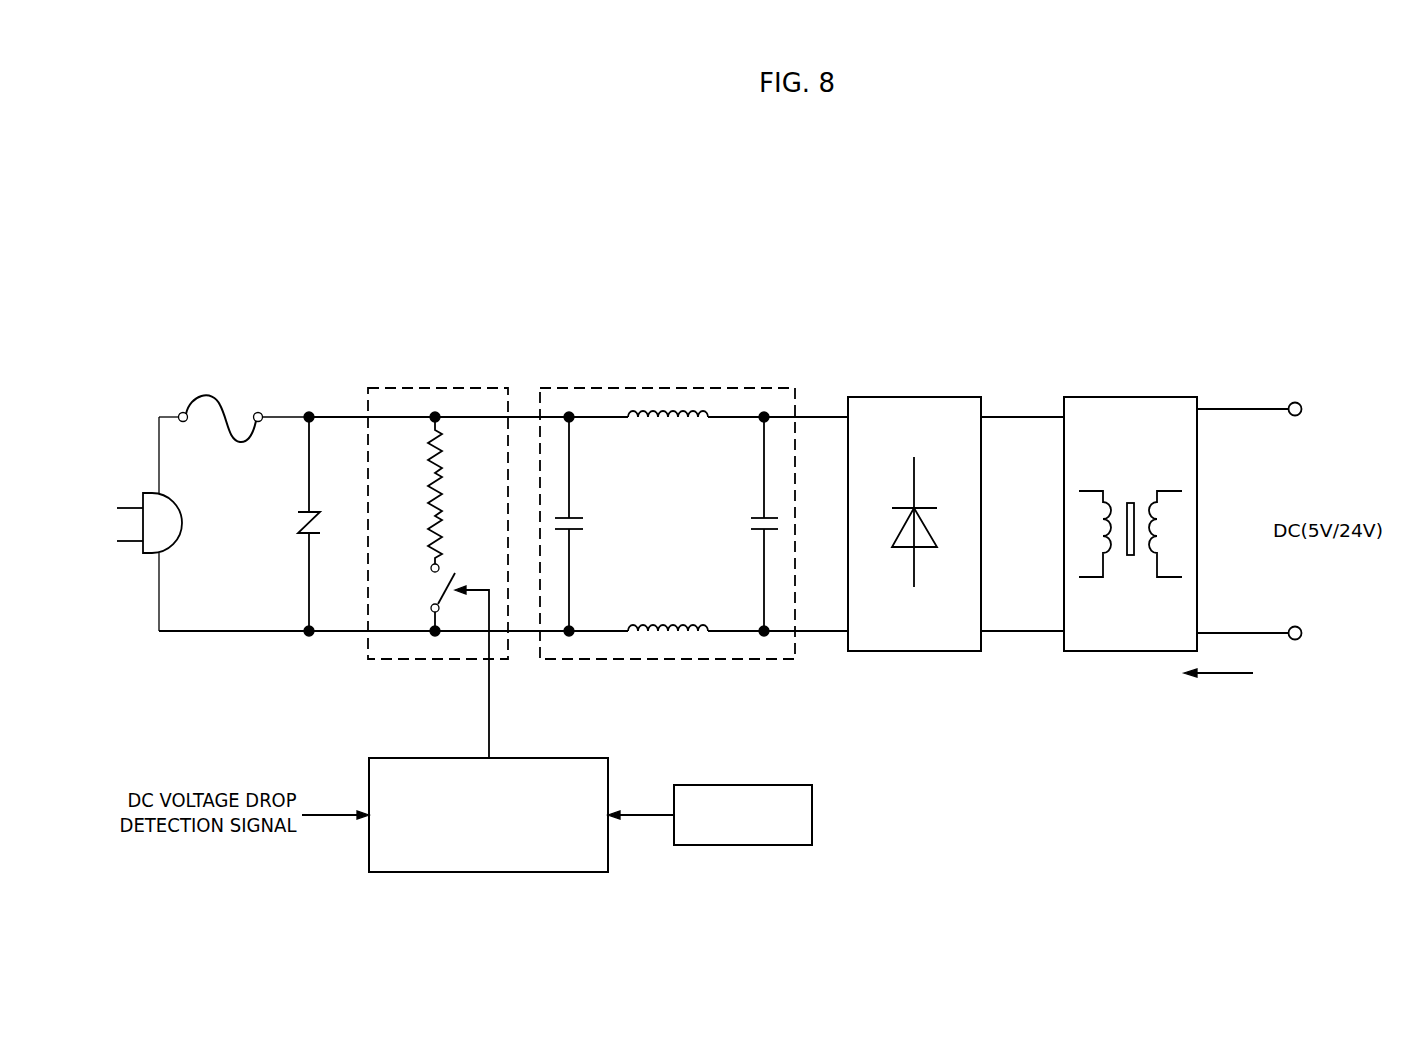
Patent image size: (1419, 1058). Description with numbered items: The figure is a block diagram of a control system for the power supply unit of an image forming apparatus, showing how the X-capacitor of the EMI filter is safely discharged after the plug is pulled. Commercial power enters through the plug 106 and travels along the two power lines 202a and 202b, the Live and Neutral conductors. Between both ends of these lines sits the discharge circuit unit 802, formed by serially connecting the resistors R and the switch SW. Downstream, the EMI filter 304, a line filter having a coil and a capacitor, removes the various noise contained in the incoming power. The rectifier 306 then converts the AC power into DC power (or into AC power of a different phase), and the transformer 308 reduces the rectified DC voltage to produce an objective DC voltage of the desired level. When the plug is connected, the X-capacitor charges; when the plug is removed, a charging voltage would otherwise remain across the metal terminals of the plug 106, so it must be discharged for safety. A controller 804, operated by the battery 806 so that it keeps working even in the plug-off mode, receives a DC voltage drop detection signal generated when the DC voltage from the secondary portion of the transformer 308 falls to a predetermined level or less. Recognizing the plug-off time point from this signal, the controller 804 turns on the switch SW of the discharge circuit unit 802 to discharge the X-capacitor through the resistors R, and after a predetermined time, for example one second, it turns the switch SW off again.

The plug 106 is at (149, 501).
The power line 202a is at (337, 416).
The power line 202b is at (337, 632).
The discharge circuit unit 802 is at (442, 387).
The EMI filter 304 is at (659, 387).
The rectifier 306 is at (923, 396).
The transformer 308 is at (1138, 396).
The controller 804 is at (531, 757).
The battery 806 is at (742, 784).